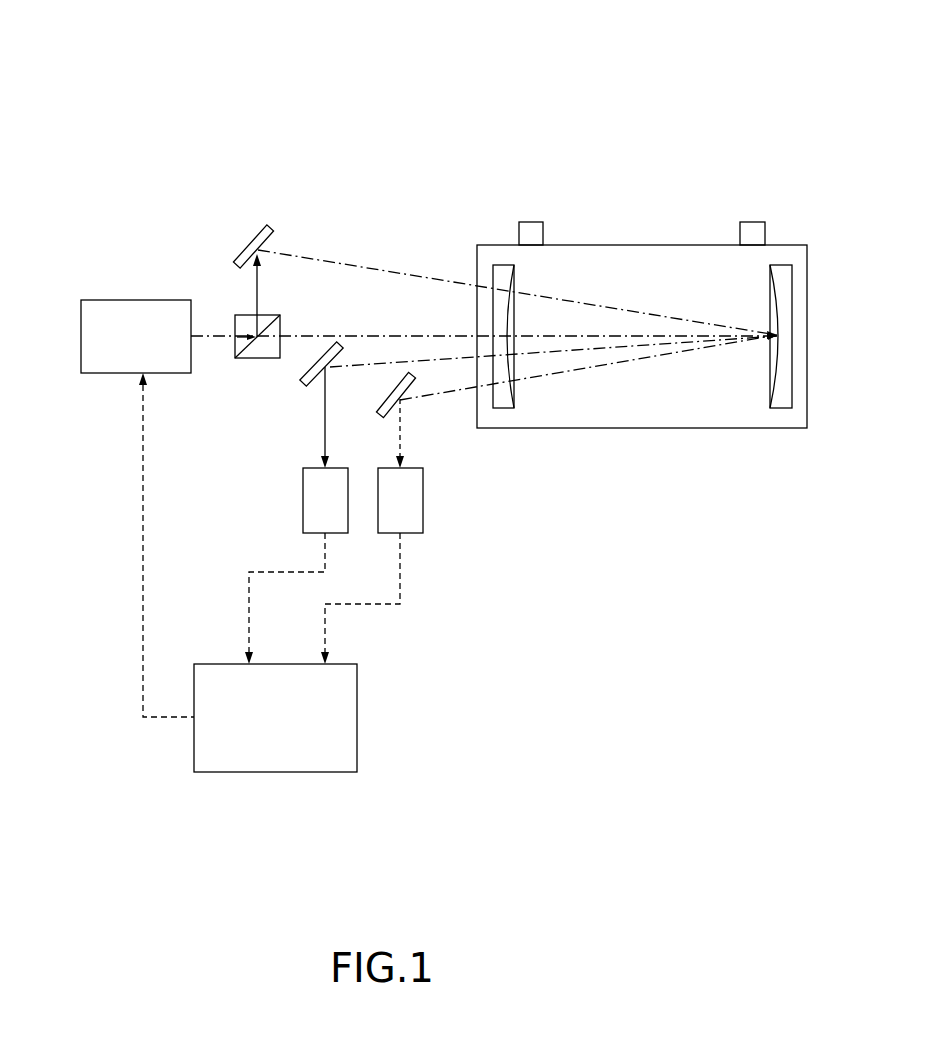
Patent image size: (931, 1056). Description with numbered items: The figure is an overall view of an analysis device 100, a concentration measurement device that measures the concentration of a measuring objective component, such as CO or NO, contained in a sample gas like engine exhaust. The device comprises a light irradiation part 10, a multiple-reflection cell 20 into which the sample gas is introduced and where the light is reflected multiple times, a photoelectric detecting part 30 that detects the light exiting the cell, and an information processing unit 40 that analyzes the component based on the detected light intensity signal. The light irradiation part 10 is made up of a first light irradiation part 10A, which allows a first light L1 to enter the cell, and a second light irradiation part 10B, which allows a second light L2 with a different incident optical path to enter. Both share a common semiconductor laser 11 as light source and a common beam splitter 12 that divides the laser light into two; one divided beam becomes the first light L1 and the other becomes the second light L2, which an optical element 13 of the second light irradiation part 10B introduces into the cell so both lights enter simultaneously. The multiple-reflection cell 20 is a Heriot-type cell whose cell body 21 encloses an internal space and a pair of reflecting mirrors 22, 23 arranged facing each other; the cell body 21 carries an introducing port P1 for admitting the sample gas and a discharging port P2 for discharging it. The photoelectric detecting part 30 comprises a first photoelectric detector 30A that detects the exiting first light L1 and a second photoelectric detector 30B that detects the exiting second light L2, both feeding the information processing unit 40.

The analysis device 100 is at (183, 88).
The light irradiation part 10 is at (112, 222).
The first light irradiation part 10A is at (228, 373).
The second light irradiation part 10B is at (223, 236).
The semiconductor laser 11 is at (137, 300).
The beam splitter 12 is at (256, 359).
The optical element 13 is at (255, 228).
The first light L1 is at (397, 333).
The second light L2 is at (394, 272).
The multiple-reflection cell 20 is at (584, 205).
The cell body 21 is at (640, 244).
The introducing port P1 is at (532, 220).
The discharging port P2 is at (752, 220).
The reflecting mirror 22 is at (503, 409).
The reflecting mirror 23 is at (781, 410).
The photoelectric detecting part 30 is at (444, 538).
The first photoelectric detector 30A is at (303, 498).
The second photoelectric detector 30B is at (425, 500).
The information processing unit 40 is at (358, 717).